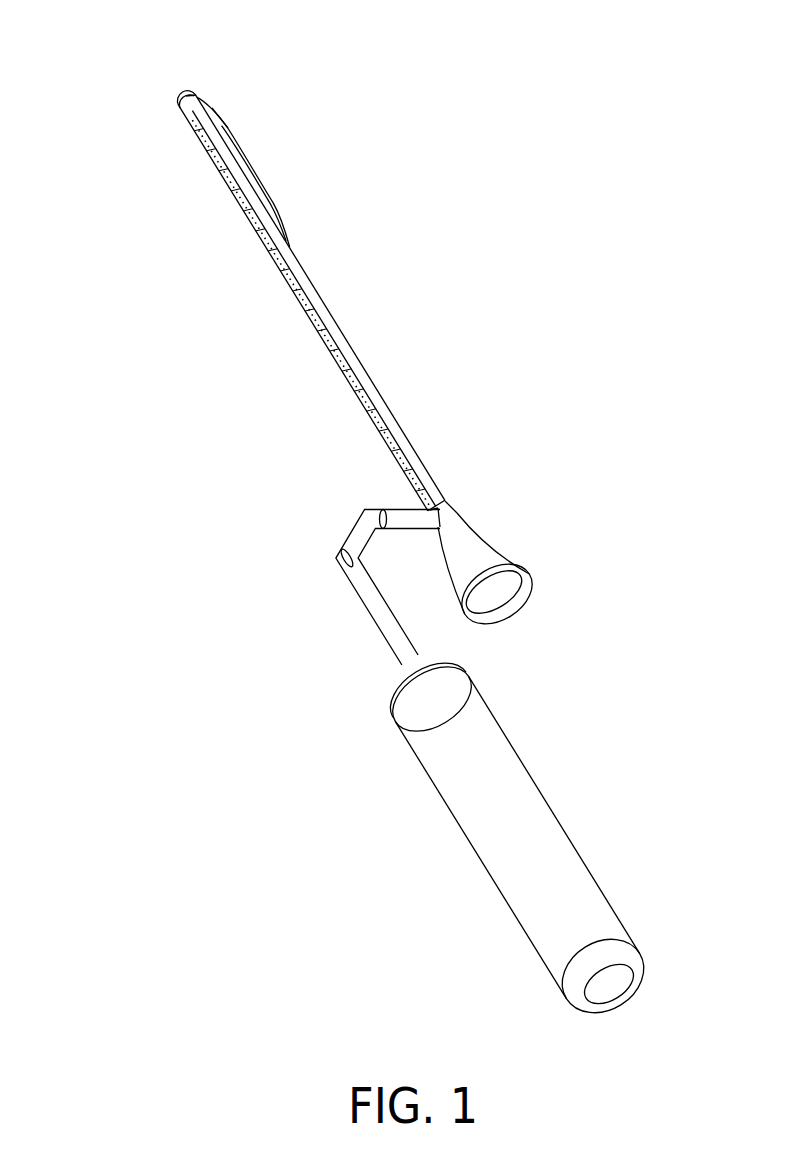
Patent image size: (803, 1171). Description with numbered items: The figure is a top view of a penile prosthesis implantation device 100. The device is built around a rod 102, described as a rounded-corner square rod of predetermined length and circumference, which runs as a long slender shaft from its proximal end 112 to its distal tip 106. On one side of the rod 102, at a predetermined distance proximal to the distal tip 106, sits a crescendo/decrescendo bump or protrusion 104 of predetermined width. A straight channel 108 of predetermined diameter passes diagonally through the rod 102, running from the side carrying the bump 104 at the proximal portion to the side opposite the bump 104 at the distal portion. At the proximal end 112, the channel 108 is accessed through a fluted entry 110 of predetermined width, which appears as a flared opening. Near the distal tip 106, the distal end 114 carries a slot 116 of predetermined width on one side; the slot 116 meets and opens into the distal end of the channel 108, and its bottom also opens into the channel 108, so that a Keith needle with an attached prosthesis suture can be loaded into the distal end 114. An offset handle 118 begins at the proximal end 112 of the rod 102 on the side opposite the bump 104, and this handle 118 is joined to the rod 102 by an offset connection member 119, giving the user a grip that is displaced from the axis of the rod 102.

The penile prosthesis implantation device 100 is at (138, 34).
The rod 102 is at (235, 227).
The protrusion 104 is at (273, 165).
The distal tip 106 is at (170, 107).
The channel 108 is at (490, 585).
The fluted entry 110 is at (547, 588).
The proximal end 112 is at (493, 522).
The distal end 114 is at (203, 95).
The slot 116 is at (225, 123).
The offset handle 118 is at (483, 897).
The offset connection member 119 is at (333, 595).